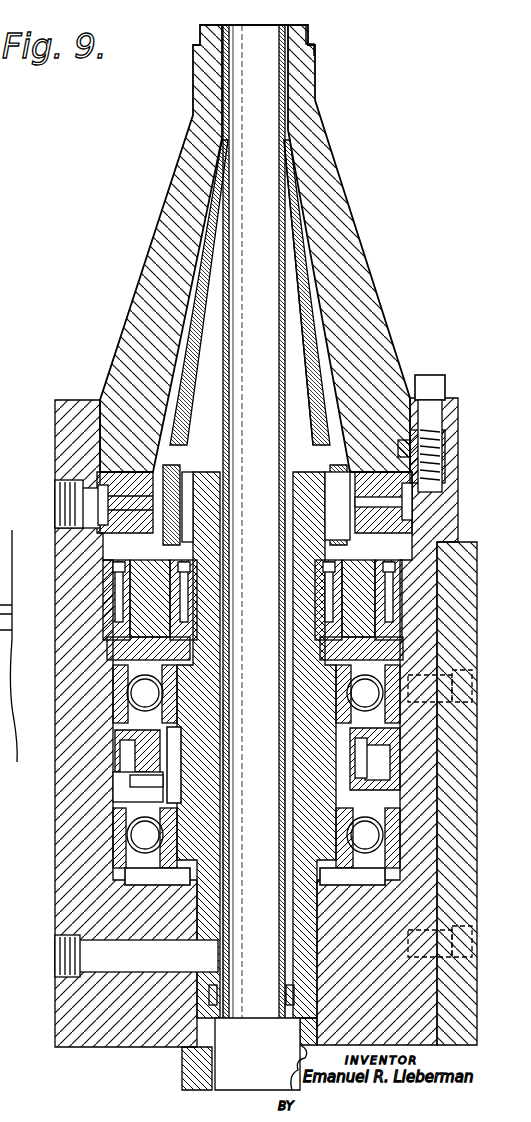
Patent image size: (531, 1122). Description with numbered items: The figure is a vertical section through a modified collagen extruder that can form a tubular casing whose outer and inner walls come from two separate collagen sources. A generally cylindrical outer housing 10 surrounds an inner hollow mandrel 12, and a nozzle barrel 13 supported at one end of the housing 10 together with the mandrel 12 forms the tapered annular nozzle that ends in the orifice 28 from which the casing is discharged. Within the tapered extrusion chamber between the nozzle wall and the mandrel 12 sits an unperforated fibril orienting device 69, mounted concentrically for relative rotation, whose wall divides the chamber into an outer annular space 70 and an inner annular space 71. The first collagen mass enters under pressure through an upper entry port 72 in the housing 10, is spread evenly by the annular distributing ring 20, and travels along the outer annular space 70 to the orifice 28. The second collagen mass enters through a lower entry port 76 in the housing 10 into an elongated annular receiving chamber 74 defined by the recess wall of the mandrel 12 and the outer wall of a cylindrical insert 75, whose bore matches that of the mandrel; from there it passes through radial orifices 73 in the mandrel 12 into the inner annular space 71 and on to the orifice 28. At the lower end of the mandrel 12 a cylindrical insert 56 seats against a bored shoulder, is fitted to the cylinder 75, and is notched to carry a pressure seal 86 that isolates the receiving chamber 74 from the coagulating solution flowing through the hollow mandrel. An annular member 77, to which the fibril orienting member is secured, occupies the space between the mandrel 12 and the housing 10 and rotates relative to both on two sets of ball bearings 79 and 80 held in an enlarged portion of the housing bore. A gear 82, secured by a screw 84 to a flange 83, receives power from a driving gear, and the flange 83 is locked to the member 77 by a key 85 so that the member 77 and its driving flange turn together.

The outer housing 10 is at (55, 872).
The mandrel 12 is at (226, 354).
The nozzle barrel 13 is at (322, 126).
The distributing ring 20 is at (384, 478).
The orifice 28 is at (312, 40).
The cylindrical insert 56 is at (216, 1078).
The fibril orienting device 69 is at (178, 440).
The outer annular space 70 is at (336, 395).
The inner annular space 71 is at (306, 322).
The upper entry port 72 is at (90, 528).
The radial orifices 73 is at (204, 503).
The annular receiving chamber 74 is at (226, 828).
The cylindrical insert 75 is at (284, 656).
The lower entry port 76 is at (98, 945).
The annular member 77 is at (180, 880).
The ball bearings 79 is at (378, 695).
The ball bearings 80 is at (378, 838).
The gear 82 is at (116, 790).
The flange 83 is at (118, 742).
The screw 84 is at (360, 772).
The key 85 is at (177, 726).
The pressure seal 86 is at (286, 996).